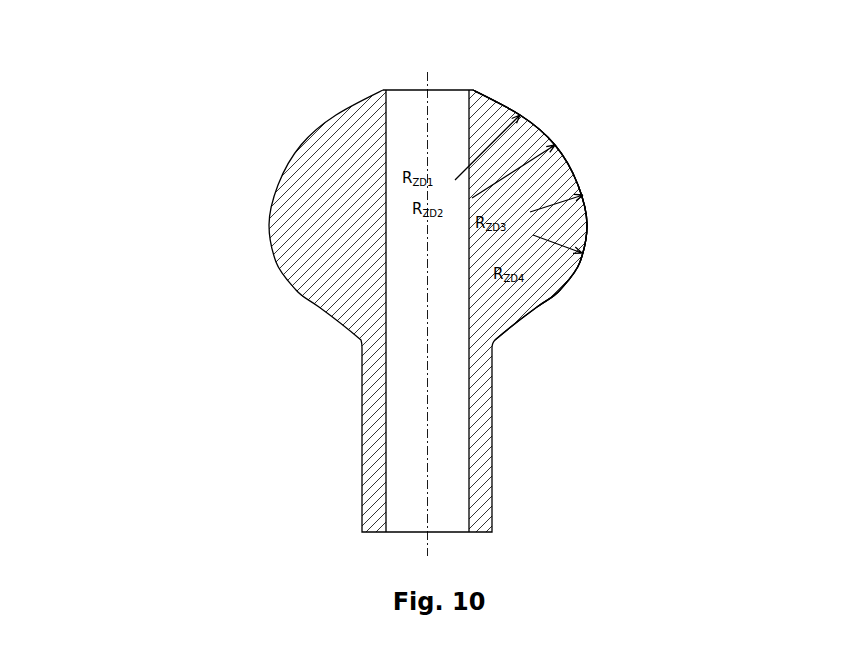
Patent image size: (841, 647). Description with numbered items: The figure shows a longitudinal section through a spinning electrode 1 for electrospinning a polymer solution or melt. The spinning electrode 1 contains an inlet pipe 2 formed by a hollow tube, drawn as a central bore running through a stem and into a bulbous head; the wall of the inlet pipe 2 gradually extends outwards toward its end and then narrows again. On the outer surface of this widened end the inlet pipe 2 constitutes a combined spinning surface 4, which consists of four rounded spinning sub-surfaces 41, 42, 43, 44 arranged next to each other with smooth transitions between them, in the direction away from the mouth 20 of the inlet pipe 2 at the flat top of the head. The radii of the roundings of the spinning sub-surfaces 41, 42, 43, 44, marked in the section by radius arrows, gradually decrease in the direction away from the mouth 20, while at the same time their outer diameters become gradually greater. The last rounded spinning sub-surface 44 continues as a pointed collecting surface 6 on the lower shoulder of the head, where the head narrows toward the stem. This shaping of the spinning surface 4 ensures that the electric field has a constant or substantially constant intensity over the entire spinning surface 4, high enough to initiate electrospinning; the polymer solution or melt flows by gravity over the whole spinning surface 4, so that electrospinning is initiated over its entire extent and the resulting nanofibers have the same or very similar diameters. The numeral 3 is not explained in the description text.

The spinning electrode 1 is at (169, 212).
The inlet pipe 2 is at (360, 444).
The valve head 3 is at (314, 65).
The combined spinning surface 4 is at (557, 59).
The first rounded spinning sub-surface 41 is at (540, 101).
The second rounded spinning sub-surface 42 is at (575, 137).
The third rounded spinning sub-surface 43 is at (593, 184).
The fourth rounded spinning sub-surface 44 is at (602, 253).
The pointed collecting surface 6 is at (546, 310).
The mouth 20 is at (423, 88).